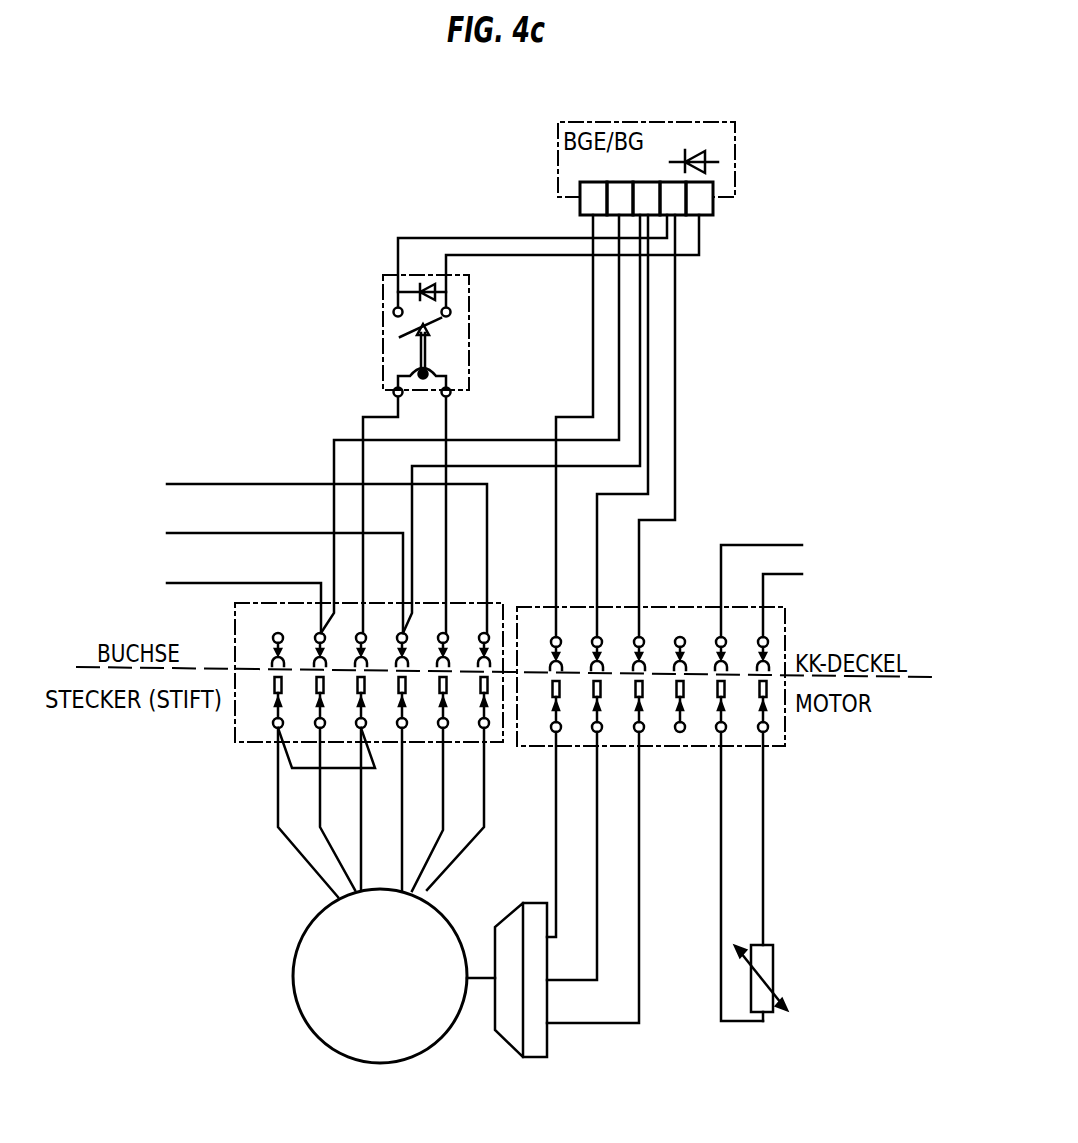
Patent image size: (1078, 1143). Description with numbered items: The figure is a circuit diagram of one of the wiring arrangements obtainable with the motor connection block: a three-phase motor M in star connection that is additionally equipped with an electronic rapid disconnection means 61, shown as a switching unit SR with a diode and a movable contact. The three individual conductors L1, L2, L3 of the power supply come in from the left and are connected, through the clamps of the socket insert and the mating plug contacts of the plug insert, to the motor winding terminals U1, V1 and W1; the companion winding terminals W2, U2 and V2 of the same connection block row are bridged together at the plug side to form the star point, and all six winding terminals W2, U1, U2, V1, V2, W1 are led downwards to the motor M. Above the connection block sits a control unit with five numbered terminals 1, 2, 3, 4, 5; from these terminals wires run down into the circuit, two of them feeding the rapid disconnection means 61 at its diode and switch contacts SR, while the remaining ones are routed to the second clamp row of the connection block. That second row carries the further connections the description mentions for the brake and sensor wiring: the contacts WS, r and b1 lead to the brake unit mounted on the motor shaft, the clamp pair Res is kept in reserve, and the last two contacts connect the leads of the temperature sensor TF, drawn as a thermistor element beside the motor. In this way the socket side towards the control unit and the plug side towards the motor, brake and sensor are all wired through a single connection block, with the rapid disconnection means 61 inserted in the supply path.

The electronic rapid disconnection means 61 is at (400, 336).
The switching relay / safety switch SR is at (426, 336).
The terminal 1 of control unit BGE/BG 1 is at (593, 198).
The terminal 2 of control unit BGE/BG 2 is at (620, 198).
The terminal 3 of control unit BGE/BG 3 is at (646, 198).
The terminal 4 of control unit BGE/BG 4 is at (673, 198).
The terminal 5 of control unit BGE/BG 5 is at (699, 198).
The conductor of the power supply L1 is at (232, 602).
The conductor of the power supply L2 is at (273, 577).
The conductor of the power supply L3 is at (315, 552).
The thermistor temperature sensor TF with leads TF is at (775, 783).
The motor winding terminal W2 is at (264, 680).
The motor winding terminal U1 is at (307, 680).
The motor winding terminal U2 is at (349, 680).
The motor winding terminal V1 is at (391, 680).
The motor winding terminal V2 is at (431, 680).
The motor winding terminal W1 is at (472, 680).
The brake coil terminal WS connector contact WS is at (540, 684).
The brake terminal r connector contact r is at (591, 684).
The brake terminal b1 connector contact b1 is at (628, 684).
The reserve clamp pair Res is at (666, 684).
The three-phase motor M 3~ M is at (380, 976).